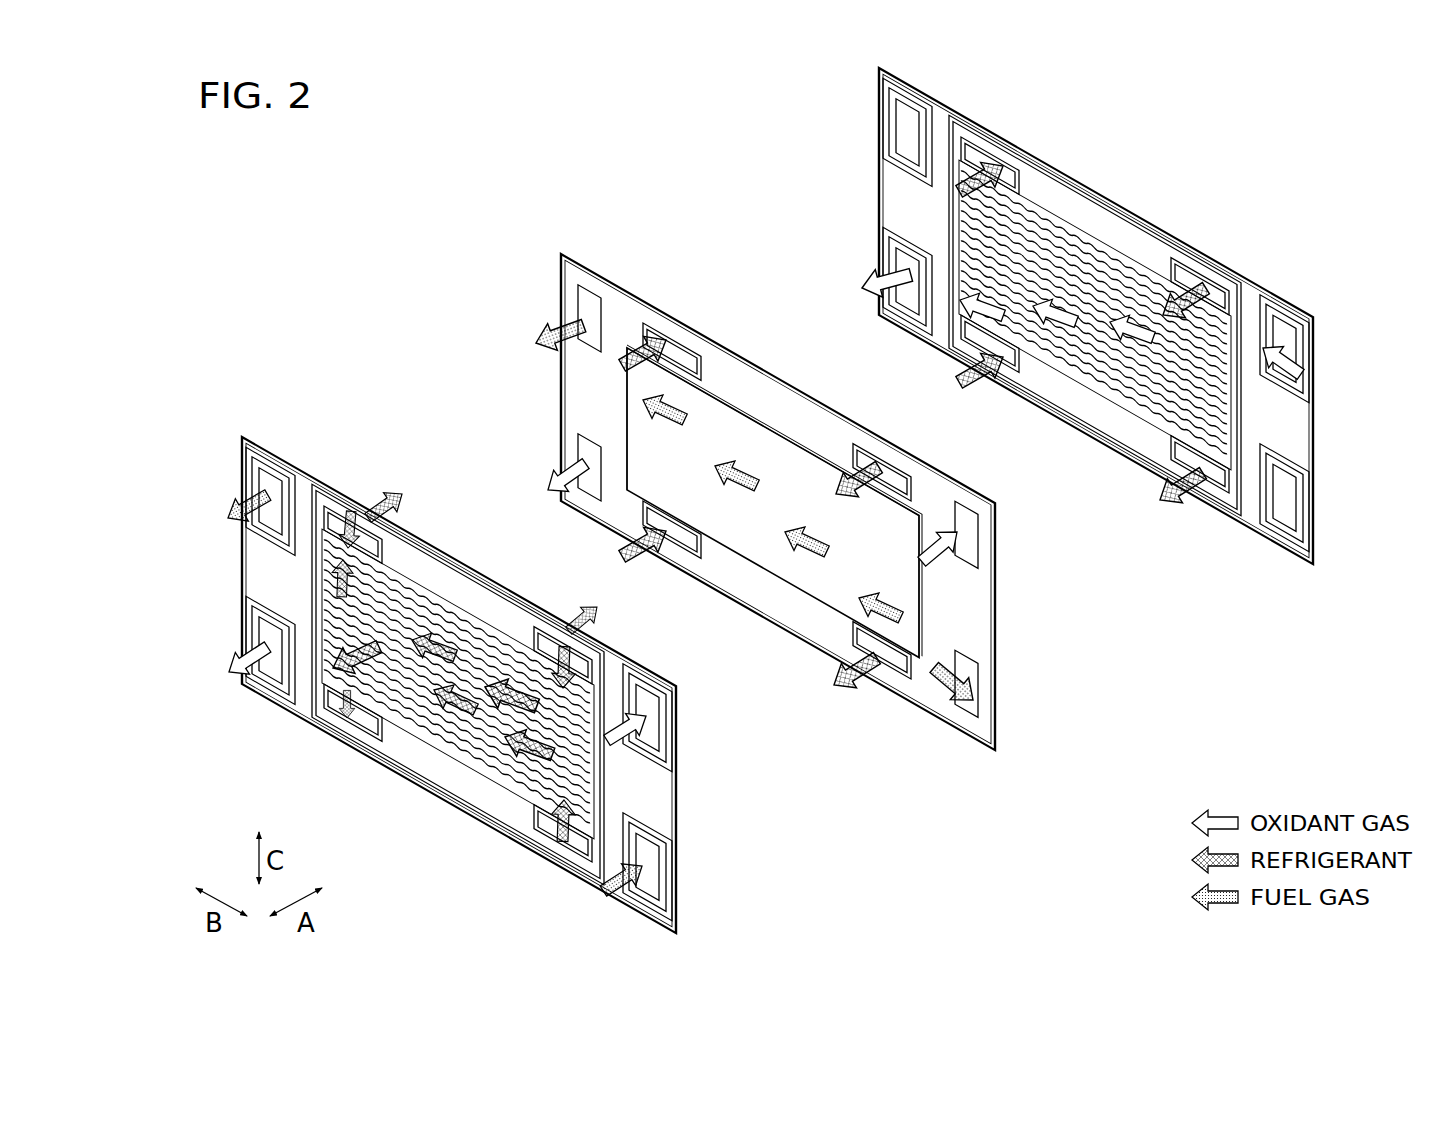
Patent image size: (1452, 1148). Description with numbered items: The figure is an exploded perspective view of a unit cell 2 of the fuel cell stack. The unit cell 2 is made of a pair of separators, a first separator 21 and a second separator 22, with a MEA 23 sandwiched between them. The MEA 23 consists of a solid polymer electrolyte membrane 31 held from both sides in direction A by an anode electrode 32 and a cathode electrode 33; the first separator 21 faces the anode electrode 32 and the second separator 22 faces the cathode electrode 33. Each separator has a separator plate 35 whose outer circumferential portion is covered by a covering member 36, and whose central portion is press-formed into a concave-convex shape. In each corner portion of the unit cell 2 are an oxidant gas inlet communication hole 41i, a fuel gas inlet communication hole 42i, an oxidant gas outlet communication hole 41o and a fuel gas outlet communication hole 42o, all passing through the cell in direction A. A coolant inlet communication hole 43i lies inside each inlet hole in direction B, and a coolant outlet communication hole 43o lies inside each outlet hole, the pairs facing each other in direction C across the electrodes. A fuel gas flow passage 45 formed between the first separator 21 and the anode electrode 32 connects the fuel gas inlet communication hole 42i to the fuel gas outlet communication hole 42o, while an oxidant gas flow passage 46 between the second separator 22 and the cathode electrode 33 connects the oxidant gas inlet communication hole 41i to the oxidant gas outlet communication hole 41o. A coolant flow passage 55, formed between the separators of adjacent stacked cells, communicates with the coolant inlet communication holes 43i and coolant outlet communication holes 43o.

The unit cell 2 is at (667, 180).
The first separator 21 is at (681, 817).
The second separator 22 is at (1120, 188).
The MEA 23 is at (581, 250).
The solid polymer electrolyte membrane 31 is at (722, 355).
The anode electrode 32 is at (738, 425).
The cathode electrode 33 is at (792, 455).
The separator plate 35 is at (1080, 243).
The covering member 36 is at (1048, 183).
The oxidant gas inlet communication hole 41i is at (1290, 345).
The oxidant gas outlet communication hole 41o is at (902, 262).
The fuel gas inlet communication hole 42i is at (1290, 494).
The fuel gas outlet communication hole 42o is at (905, 118).
The coolant inlet communication hole 43i is at (1237, 268).
The coolant outlet communication hole 43o is at (986, 152).
The fuel gas flow passage 45 is at (605, 688).
The oxidant gas flow passage 46 is at (1135, 320).
The coolant flow passage 55 is at (1237, 416).